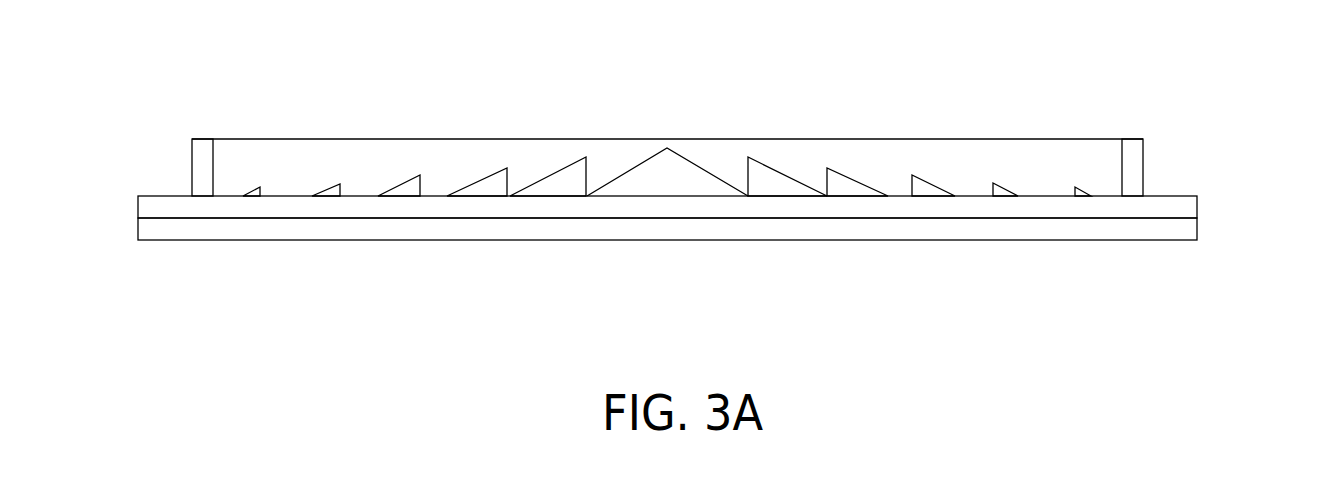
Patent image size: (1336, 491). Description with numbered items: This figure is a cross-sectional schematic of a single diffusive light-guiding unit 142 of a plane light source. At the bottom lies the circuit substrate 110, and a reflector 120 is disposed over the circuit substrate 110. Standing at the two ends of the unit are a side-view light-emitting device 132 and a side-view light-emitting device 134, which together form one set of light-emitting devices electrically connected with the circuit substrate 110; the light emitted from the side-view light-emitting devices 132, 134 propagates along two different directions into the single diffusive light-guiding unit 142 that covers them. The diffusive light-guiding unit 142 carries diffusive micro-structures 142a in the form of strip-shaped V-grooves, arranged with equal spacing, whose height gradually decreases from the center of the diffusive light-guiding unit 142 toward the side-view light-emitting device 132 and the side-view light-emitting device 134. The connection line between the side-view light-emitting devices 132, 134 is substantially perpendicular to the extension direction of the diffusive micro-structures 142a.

The circuit substrate 110 is at (1187, 230).
The reflector 120 is at (1180, 206).
The side-view light-emitting device 132 is at (200, 168).
The side-view light-emitting device 134 is at (1135, 158).
The diffusive light-guiding unit 142 is at (293, 148).
The diffusive micro-structures 142a is at (614, 185).